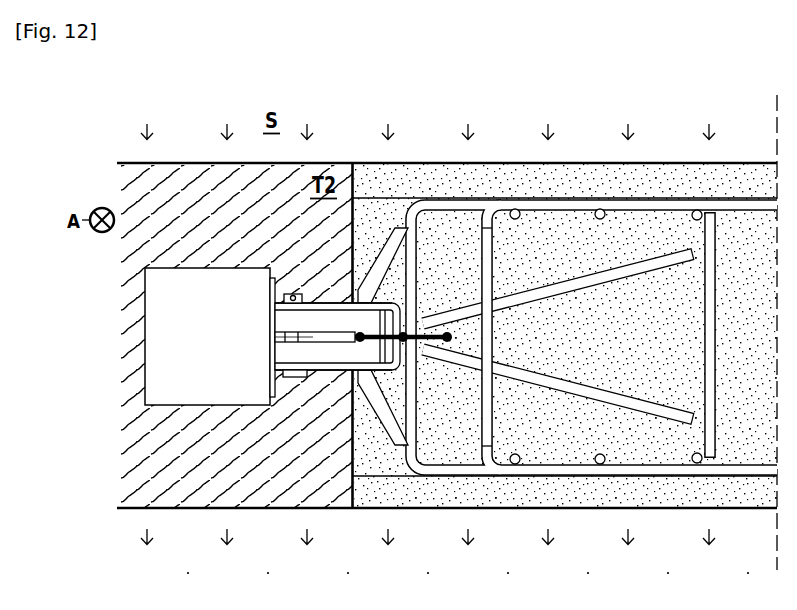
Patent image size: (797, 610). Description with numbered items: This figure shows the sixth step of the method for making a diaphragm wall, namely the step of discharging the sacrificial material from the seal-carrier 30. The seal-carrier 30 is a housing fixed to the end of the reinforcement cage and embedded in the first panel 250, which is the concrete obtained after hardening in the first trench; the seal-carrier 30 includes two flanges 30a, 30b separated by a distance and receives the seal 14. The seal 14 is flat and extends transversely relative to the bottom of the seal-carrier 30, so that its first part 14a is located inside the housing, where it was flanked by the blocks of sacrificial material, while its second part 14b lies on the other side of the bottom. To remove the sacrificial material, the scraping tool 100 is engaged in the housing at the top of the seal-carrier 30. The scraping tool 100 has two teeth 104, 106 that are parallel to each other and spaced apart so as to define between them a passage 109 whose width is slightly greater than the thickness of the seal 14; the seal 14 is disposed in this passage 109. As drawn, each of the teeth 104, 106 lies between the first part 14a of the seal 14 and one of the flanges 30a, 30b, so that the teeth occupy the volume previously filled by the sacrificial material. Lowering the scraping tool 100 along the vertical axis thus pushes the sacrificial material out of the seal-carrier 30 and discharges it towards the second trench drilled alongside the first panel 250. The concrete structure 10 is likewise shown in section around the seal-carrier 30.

The concrete structure 10 is at (547, 190).
The seal 14 is at (418, 341).
The first part of the seal 14a is at (424, 322).
The second part of the seal 14b is at (392, 352).
The seal-carrier 30 is at (360, 290).
The flange 30a is at (383, 290).
The flange 30b is at (390, 382).
The scraping tool 100 is at (210, 304).
The tooth 104 is at (328, 302).
The tooth 106 is at (333, 366).
The passage 109 is at (312, 337).
The first panel 250 is at (432, 496).